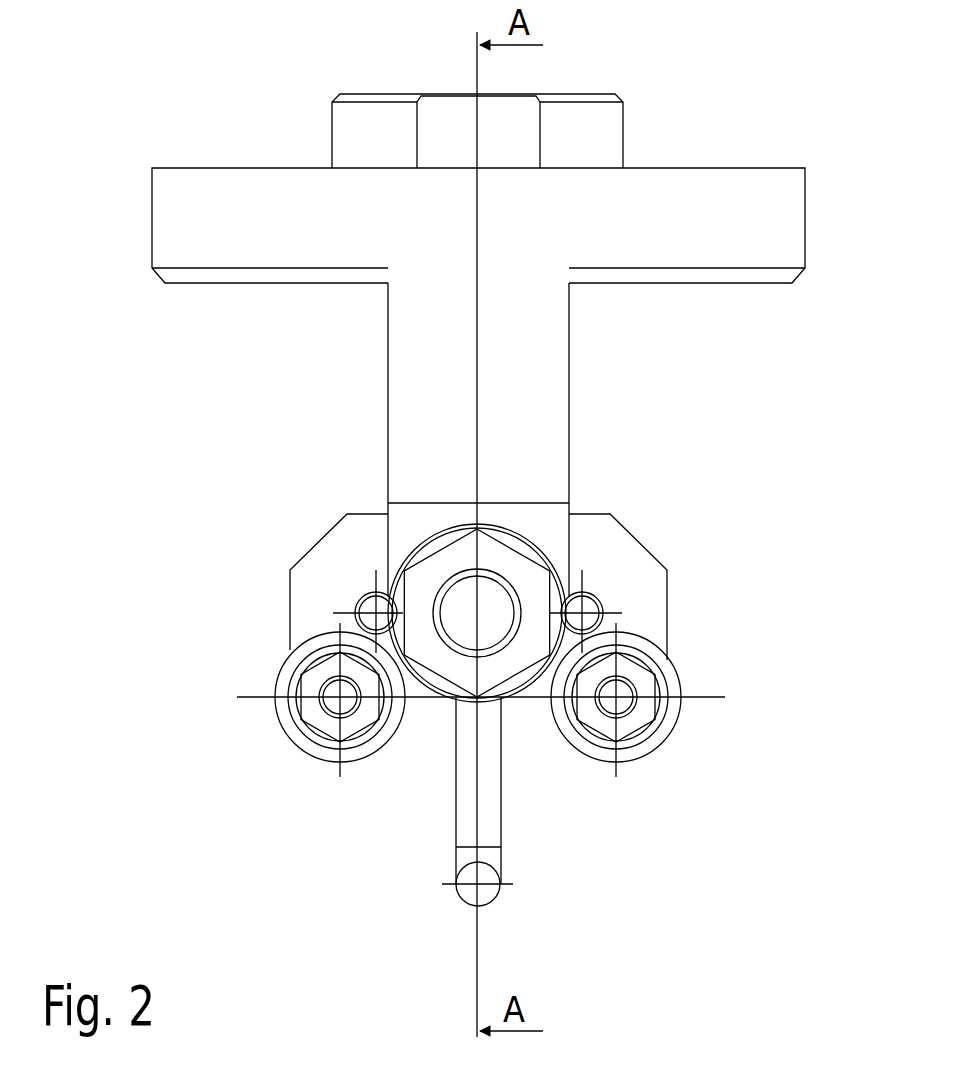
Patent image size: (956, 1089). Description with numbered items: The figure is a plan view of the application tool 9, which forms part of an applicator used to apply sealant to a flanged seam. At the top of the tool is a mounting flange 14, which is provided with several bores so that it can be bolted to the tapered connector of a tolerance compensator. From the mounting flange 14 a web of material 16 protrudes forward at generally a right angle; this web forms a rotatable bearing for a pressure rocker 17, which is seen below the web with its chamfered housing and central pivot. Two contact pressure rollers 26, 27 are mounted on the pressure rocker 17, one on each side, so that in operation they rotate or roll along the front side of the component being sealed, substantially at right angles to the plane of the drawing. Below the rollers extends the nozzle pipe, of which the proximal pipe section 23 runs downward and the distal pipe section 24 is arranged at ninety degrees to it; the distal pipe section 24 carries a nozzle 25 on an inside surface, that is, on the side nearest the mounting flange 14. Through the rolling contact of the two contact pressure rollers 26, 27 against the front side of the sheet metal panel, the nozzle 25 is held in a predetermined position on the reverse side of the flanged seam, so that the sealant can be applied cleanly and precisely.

The application tool 9 is at (172, 400).
The mounting flange 14 is at (268, 205).
The web of material 16 is at (530, 385).
The pressure rocker 17 is at (333, 555).
The proximal pipe section 23 is at (490, 782).
The distal pipe section 24 is at (485, 895).
The nozzle 25 is at (425, 850).
The contact pressure roller 26 is at (293, 743).
The contact pressure roller 27 is at (653, 740).